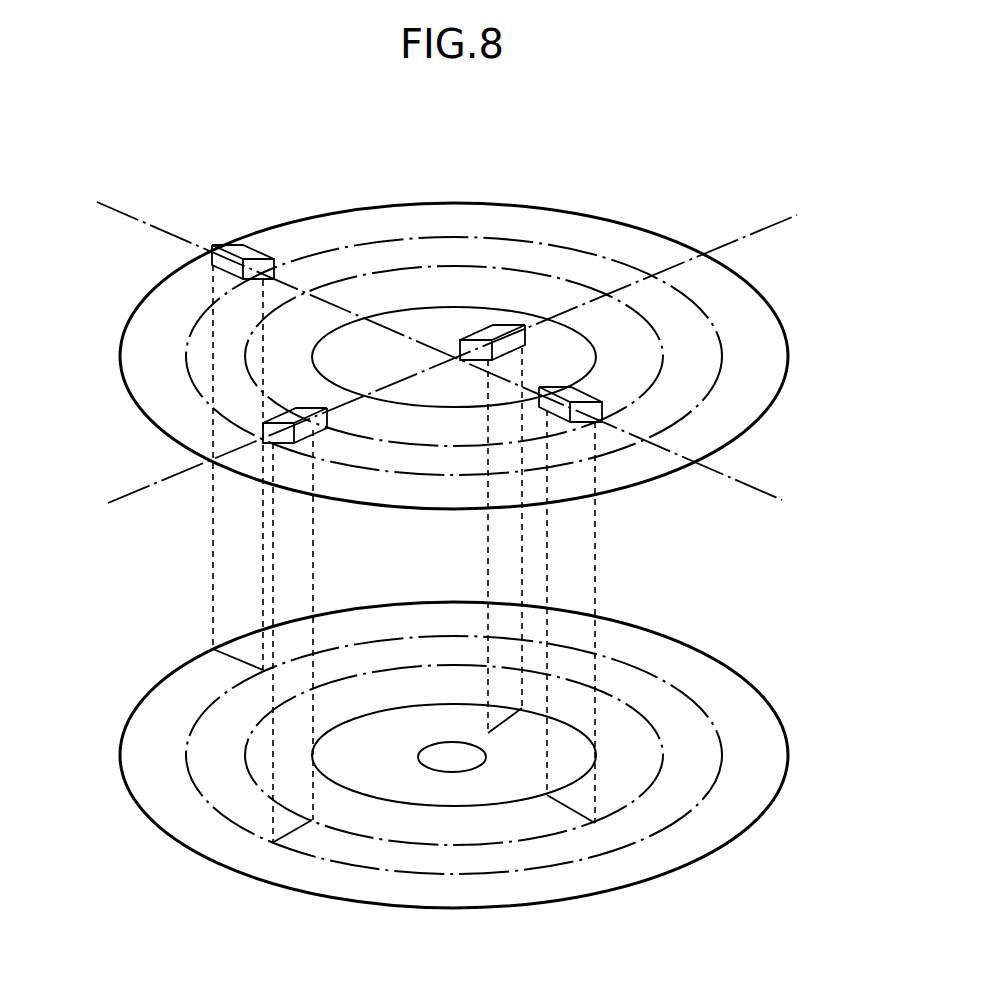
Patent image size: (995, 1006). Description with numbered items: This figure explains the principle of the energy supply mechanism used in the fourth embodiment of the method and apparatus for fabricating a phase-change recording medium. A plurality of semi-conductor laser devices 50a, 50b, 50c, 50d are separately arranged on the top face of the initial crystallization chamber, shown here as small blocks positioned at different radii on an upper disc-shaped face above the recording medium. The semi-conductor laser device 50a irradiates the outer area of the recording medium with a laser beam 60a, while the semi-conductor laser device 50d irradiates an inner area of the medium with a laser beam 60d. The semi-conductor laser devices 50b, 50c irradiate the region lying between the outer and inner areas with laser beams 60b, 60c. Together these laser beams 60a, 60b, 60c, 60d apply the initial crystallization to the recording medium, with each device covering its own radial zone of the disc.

The semi-conductor laser device 50a is at (253, 250).
The semi-conductor laser device 50b is at (265, 422).
The semi-conductor laser device 50c is at (603, 398).
The semi-conductor laser device 50d is at (499, 324).
The laser beam 60a is at (216, 655).
The laser beam 60b is at (297, 838).
The laser beam 60c is at (563, 806).
The laser beam 60d is at (503, 730).